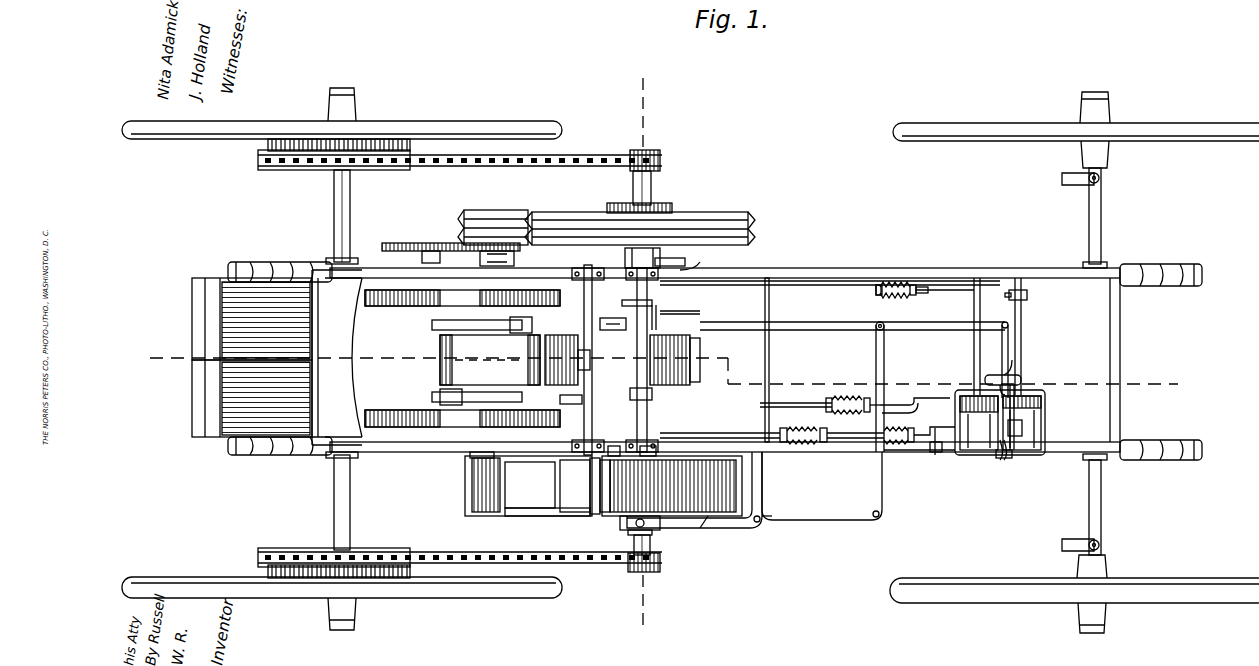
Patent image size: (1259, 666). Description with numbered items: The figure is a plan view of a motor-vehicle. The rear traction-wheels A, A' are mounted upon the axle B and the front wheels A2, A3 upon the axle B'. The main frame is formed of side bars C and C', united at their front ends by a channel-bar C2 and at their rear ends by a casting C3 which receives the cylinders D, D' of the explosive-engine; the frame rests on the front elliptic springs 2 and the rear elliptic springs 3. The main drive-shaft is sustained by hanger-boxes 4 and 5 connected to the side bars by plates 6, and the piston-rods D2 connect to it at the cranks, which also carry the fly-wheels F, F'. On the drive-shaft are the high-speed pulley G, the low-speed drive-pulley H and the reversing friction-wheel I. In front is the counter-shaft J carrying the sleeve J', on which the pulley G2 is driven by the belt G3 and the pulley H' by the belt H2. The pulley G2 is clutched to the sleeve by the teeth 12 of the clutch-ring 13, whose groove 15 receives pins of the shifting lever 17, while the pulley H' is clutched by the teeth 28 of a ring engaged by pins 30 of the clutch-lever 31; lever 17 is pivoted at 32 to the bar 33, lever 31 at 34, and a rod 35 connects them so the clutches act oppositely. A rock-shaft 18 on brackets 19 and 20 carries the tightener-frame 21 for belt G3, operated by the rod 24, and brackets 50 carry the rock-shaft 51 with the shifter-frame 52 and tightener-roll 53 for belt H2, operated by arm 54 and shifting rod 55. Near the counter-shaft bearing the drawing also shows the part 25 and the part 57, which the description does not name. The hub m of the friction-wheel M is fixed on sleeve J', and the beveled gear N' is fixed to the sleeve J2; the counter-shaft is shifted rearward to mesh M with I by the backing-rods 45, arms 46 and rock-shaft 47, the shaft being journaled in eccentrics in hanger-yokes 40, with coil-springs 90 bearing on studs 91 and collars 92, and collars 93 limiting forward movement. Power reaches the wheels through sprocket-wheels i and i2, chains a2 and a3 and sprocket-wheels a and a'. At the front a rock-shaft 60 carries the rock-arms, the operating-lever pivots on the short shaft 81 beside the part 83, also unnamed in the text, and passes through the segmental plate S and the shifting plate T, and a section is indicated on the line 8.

The rear traction-wheel A is at (342, 594).
The rear traction-wheel A' is at (342, 113).
The front wheel A2 is at (1074, 591).
The front wheel A3 is at (1168, 114).
The rear axle B is at (347, 360).
The front axle B' is at (1097, 361).
The side bar C is at (725, 352).
The side bar C' is at (822, 486).
The channel-bar C2 is at (1121, 341).
The casting C3 is at (337, 357).
The cylinder D is at (252, 319).
The cylinder D' is at (252, 398).
The piston-rod D2 is at (418, 330).
The fly-wheel F is at (462, 417).
The fly-wheel F' is at (462, 297).
The high-speed pulley G is at (440, 345).
The pulley G2 is at (700, 382).
The belt G3 is at (690, 367).
The low-speed drive-pulley H is at (510, 491).
The pulley H' is at (694, 510).
The belt H2 is at (672, 486).
The reversing gear-wheel I is at (462, 216).
The counter-shaft J is at (661, 551).
The sleeve J' is at (650, 360).
The sleeve J2 is at (652, 180).
The reversing gear-wheel M is at (648, 228).
The beveled gear-wheel N' is at (658, 196).
The segmental plate S is at (1046, 410).
The shifting plate T is at (1040, 380).
The sprocket-wheel a is at (334, 551).
The sprocket-wheel a' is at (334, 166).
The chain a2 is at (458, 550).
The sprocket-chain a3 is at (437, 168).
The sprocket-wheel i is at (638, 572).
The sprocket-wheel i2 is at (660, 164).
The hub m is at (625, 257).
The elliptic spring 2 is at (1150, 275).
The elliptic spring 3 is at (270, 266).
The hanger-box 4 is at (492, 200).
The hanger-box 5 is at (470, 455).
The plate 6 is at (641, 356).
The section line 8 is at (662, 370).
The clutch teeth 12 is at (567, 360).
The clutch-ring 13 is at (630, 395).
The annular peripheral groove 15 is at (611, 318).
The shifting lever 17 is at (815, 330).
The rock-shaft 18 is at (652, 304).
The bracket 19 is at (690, 318).
The bracket 20 is at (660, 268).
The tightener-frame 21 is at (580, 392).
The rod 24 is at (805, 403).
The bearing cap 25 is at (628, 536).
The clutch teeth 28 is at (620, 523).
The pin 30 is at (933, 302).
The clutch-lever 31 is at (706, 528).
The pivot 32 is at (768, 322).
The bar 33 is at (770, 364).
The pivot 34 is at (762, 528).
The rod 35 is at (882, 388).
The hanger-yoke 40 is at (680, 312).
The backing-rod 45 is at (929, 294).
The arm 46 is at (1028, 296).
The rock-shaft 47 is at (1022, 358).
The bracket 50 is at (585, 270).
The rock-shaft 51 is at (592, 484).
The shifter-frame 52 is at (556, 516).
The tightener-roll 53 is at (496, 485).
The arm 54 is at (614, 456).
The shifting rod 55 is at (913, 452).
The drum 57 is at (604, 488).
The rock-shaft 60 is at (974, 354).
The short shaft 81 is at (1004, 458).
The lever arm 83 is at (1022, 379).
The coil-spring 90 is at (898, 480).
The stud 91 is at (880, 295).
The collar 92 is at (915, 288).
The collar 93 is at (878, 287).